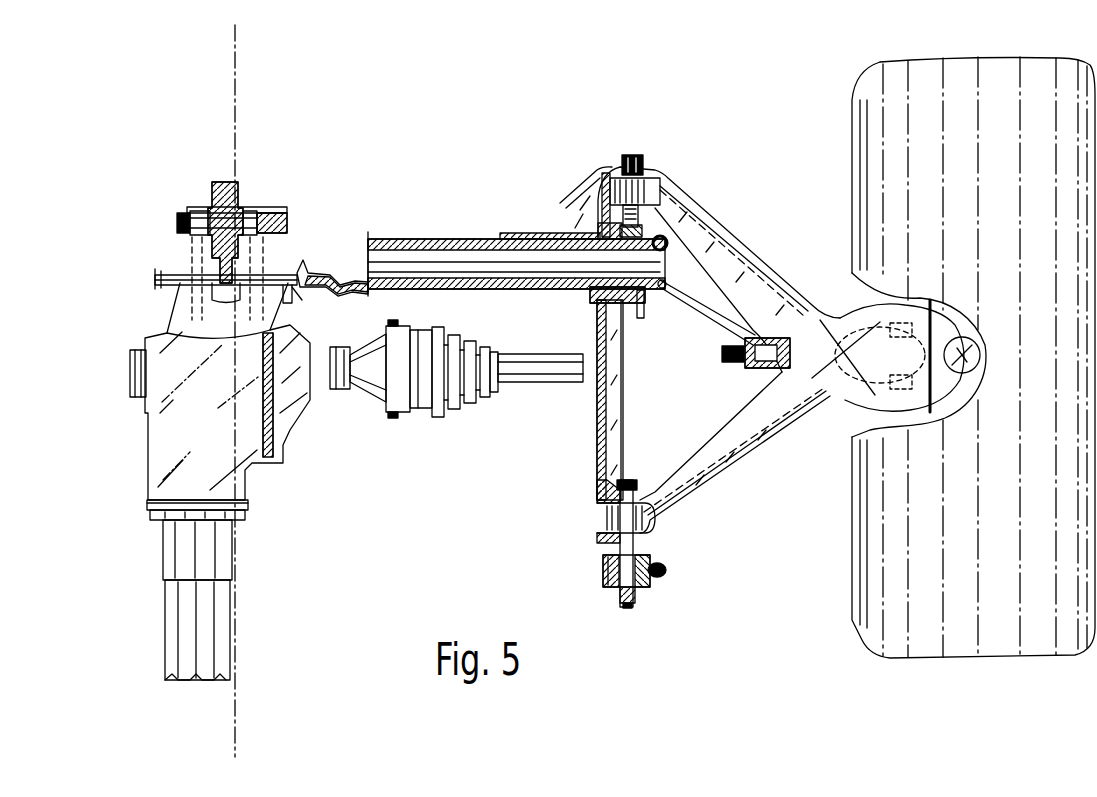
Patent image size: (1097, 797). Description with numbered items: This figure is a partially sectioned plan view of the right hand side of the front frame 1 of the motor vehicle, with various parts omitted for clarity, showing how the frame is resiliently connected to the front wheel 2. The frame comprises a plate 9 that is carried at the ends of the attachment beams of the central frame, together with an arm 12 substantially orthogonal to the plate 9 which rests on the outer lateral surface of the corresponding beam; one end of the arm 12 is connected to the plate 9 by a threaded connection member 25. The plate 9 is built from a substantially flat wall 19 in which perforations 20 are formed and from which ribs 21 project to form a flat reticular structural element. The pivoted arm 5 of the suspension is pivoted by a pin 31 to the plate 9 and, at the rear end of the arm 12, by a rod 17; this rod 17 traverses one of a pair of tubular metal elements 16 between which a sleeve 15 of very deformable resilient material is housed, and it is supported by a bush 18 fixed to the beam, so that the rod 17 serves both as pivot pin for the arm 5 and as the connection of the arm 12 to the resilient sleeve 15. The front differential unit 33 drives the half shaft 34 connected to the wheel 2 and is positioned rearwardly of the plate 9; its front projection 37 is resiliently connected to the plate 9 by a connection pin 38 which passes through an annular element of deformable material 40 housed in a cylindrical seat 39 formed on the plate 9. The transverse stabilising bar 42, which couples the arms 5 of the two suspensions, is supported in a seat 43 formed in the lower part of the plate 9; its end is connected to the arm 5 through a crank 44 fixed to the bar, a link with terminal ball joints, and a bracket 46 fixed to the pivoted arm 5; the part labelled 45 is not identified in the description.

The front frame 1 is at (348, 247).
The front wheel 2 is at (890, 165).
The pivoted arm 5 is at (756, 300).
The plate 9 is at (327, 270).
The arm 12 is at (590, 438).
The sleeve 15 is at (648, 600).
The tubular metal element 16 is at (603, 570).
The rod 17 is at (640, 540).
The bush 18 is at (604, 578).
The flat wall 19 is at (187, 280).
The perforation 20 is at (183, 272).
The rib 21 is at (298, 292).
The threaded connection member 25 is at (641, 318).
The pin 31 is at (645, 175).
The front differential unit 33 is at (255, 465).
The half shaft 34 is at (528, 380).
The front projection 37 is at (198, 210).
The connection pin 38 is at (268, 210).
The cylindrical seat 39 is at (216, 183).
The annular element of deformable material 40 is at (228, 298).
The transverse stabilising bar 42 is at (465, 239).
The seat 43 is at (572, 232).
The crank 44 is at (697, 294).
The bolt 45 is at (737, 366).
The bracket 46 is at (781, 375).